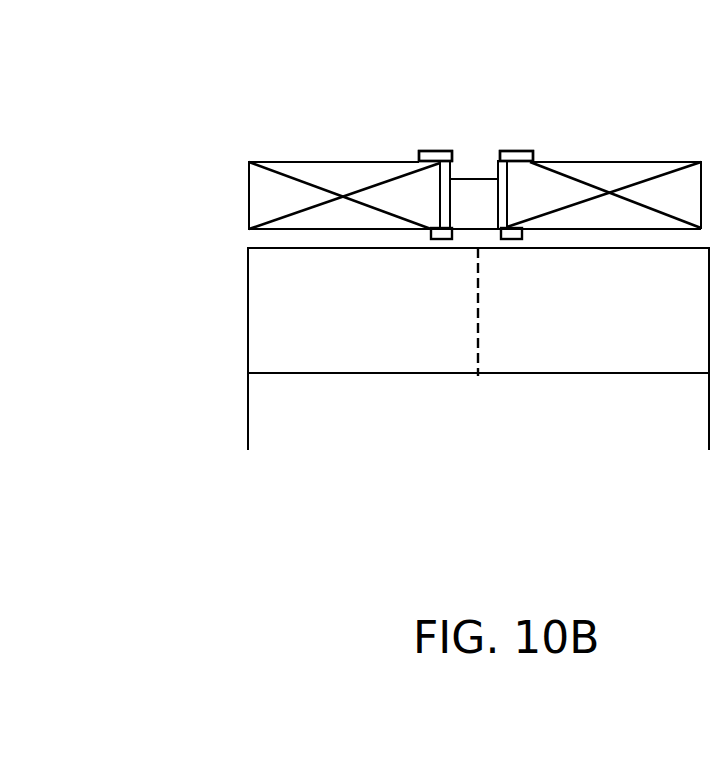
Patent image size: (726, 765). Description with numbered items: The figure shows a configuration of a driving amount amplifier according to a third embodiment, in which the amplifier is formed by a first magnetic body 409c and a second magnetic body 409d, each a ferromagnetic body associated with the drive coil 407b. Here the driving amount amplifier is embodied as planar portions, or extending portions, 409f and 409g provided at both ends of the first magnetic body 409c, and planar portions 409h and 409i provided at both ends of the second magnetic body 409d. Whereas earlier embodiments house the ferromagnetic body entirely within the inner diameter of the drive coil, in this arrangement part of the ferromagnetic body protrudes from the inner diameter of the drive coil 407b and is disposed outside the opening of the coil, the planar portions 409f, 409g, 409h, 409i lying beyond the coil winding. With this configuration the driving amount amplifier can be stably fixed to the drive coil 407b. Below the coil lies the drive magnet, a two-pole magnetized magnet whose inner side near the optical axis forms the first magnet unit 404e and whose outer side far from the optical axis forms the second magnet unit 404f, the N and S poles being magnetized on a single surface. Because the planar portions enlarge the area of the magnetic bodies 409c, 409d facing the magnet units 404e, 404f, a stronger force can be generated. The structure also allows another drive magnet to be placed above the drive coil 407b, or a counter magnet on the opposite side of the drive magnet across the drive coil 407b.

The drive coil 407b is at (258, 196).
The first magnetic body 409c is at (419, 157).
The planar portion 409f is at (442, 150).
The planar portion 409g is at (446, 184).
The planar portion 409h is at (512, 153).
The second magnetic body 409d is at (530, 162).
The planar portion 409i is at (508, 185).
The first magnet unit 404e is at (343, 343).
The second magnet unit 404f is at (663, 343).